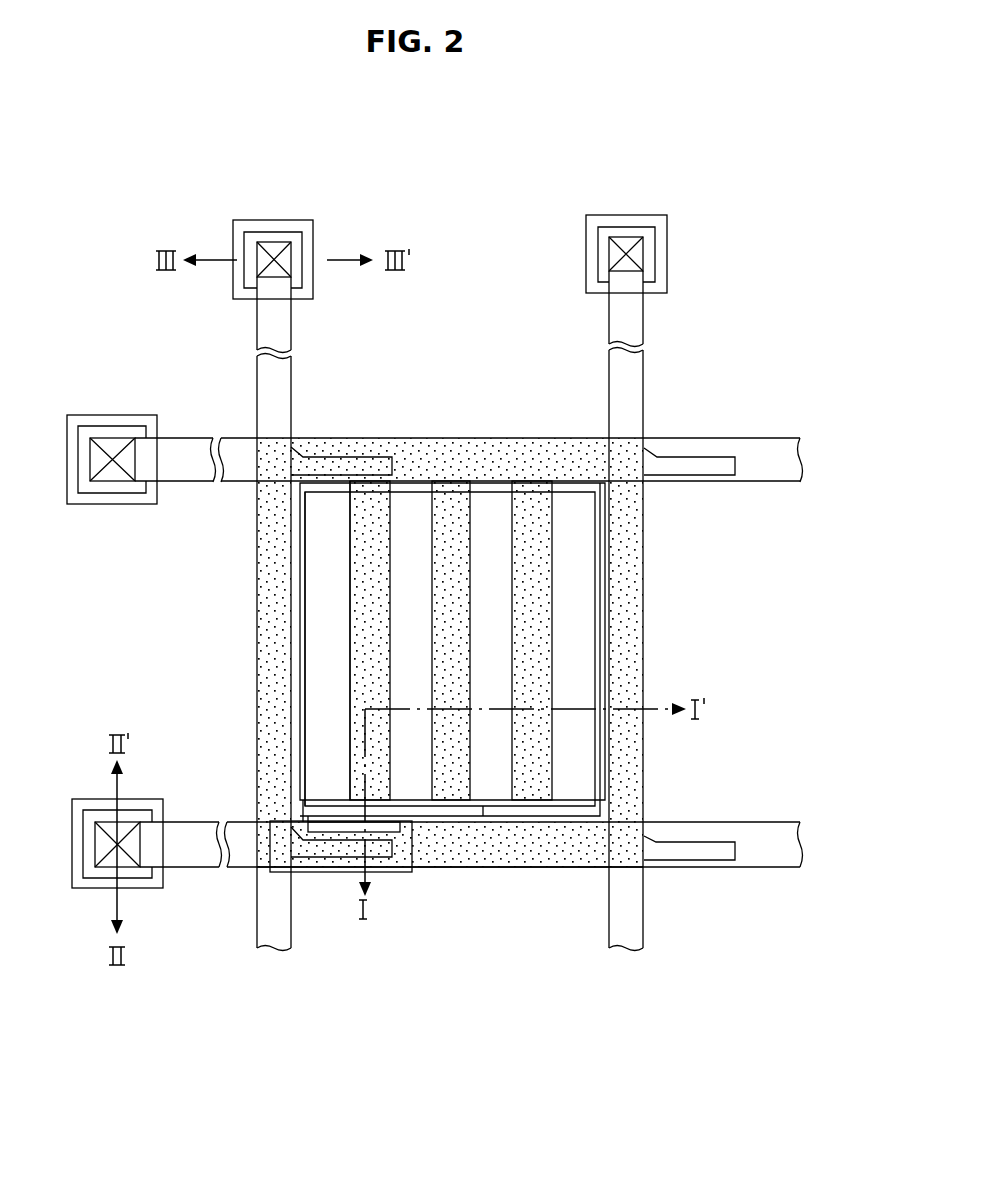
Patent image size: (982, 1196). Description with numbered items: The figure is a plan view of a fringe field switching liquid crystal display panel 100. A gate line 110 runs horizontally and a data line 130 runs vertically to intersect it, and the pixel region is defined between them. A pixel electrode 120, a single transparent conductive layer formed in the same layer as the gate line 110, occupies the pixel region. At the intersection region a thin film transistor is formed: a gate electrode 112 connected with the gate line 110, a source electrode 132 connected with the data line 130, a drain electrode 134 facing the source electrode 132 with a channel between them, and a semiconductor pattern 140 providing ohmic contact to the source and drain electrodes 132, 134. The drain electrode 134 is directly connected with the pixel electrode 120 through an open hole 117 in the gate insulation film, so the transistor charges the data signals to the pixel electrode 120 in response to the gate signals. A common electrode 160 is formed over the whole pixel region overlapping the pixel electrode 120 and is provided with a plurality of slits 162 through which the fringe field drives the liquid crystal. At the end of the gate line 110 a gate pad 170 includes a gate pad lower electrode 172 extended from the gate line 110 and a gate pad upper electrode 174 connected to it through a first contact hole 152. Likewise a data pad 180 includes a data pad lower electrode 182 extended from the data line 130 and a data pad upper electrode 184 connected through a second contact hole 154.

The fringe field switching liquid crystal display panel 100 is at (765, 282).
The gate line 110 is at (790, 843).
The gate electrode 112 is at (380, 868).
The open hole 117 is at (607, 801).
The pixel electrode 120 is at (597, 660).
The data line 130 is at (272, 655).
The source electrode 132 is at (340, 870).
The drain electrode 134 is at (465, 817).
The semiconductor pattern 140 is at (408, 873).
The first contact hole 152 is at (108, 827).
The second contact hole 154 is at (287, 252).
The common electrode 160 is at (370, 505).
The slits 162 is at (323, 508).
The gate pad 170 is at (121, 844).
The gate pad lower electrode 172 is at (105, 879).
The gate pad upper electrode 174 is at (157, 889).
The data pad 180 is at (273, 261).
The data pad lower electrode 182 is at (272, 252).
The data pad upper electrode 184 is at (233, 283).